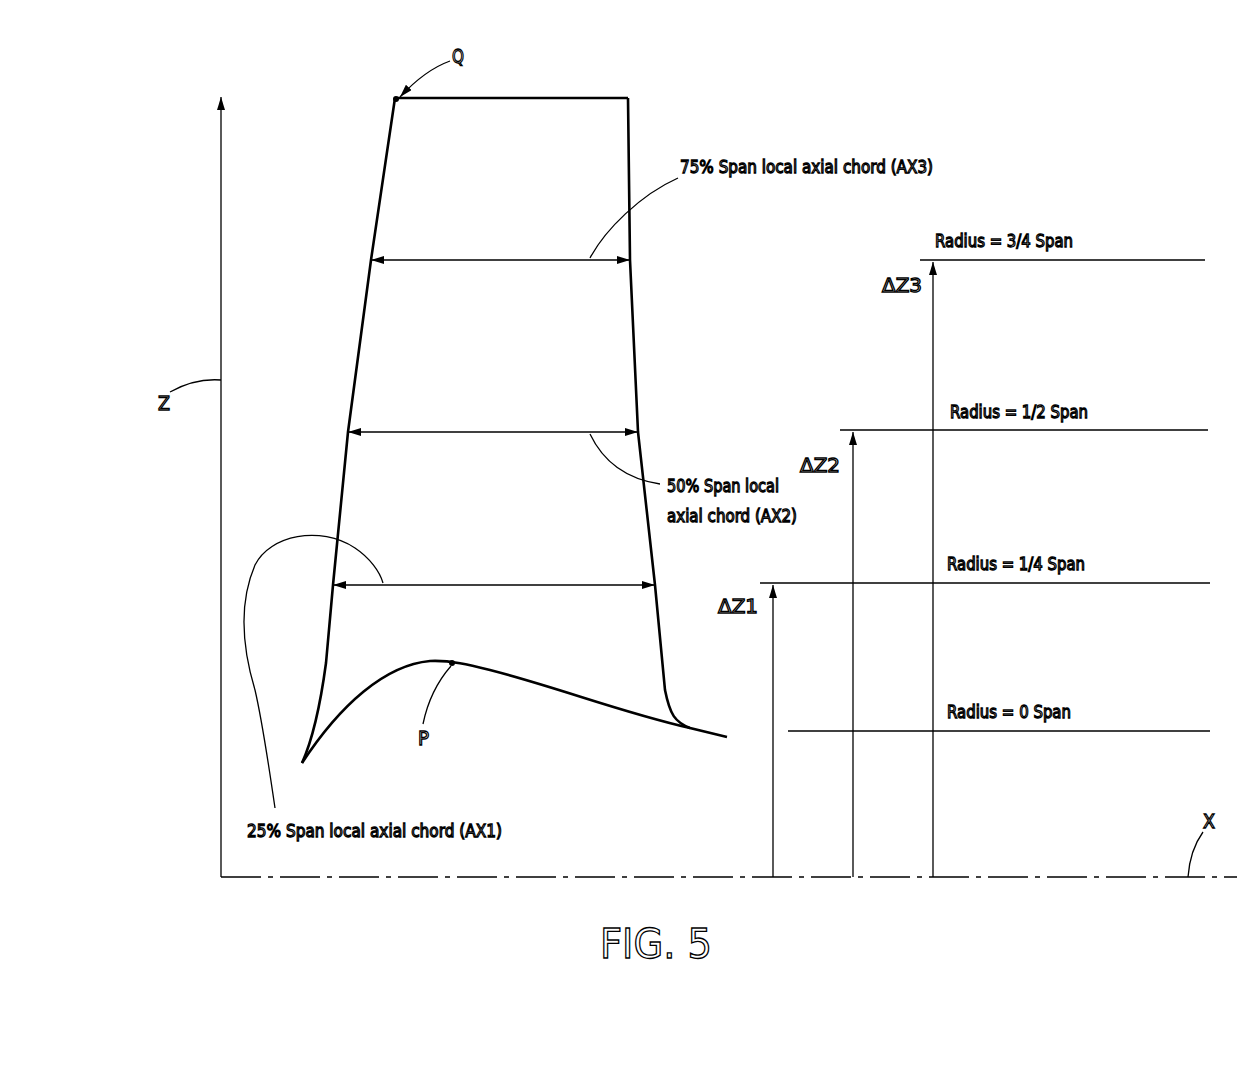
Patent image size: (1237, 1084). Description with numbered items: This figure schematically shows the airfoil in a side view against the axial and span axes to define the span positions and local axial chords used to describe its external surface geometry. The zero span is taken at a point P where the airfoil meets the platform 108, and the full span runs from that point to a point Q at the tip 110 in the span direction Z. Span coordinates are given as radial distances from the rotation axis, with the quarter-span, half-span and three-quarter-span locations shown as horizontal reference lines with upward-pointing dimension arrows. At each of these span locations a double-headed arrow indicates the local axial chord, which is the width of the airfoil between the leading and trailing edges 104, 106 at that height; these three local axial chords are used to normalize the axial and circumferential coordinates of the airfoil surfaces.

The leading edge 104 is at (360, 323).
The trailing edge 106 is at (634, 328).
The platform 108 is at (538, 682).
The tip 110 is at (527, 98).